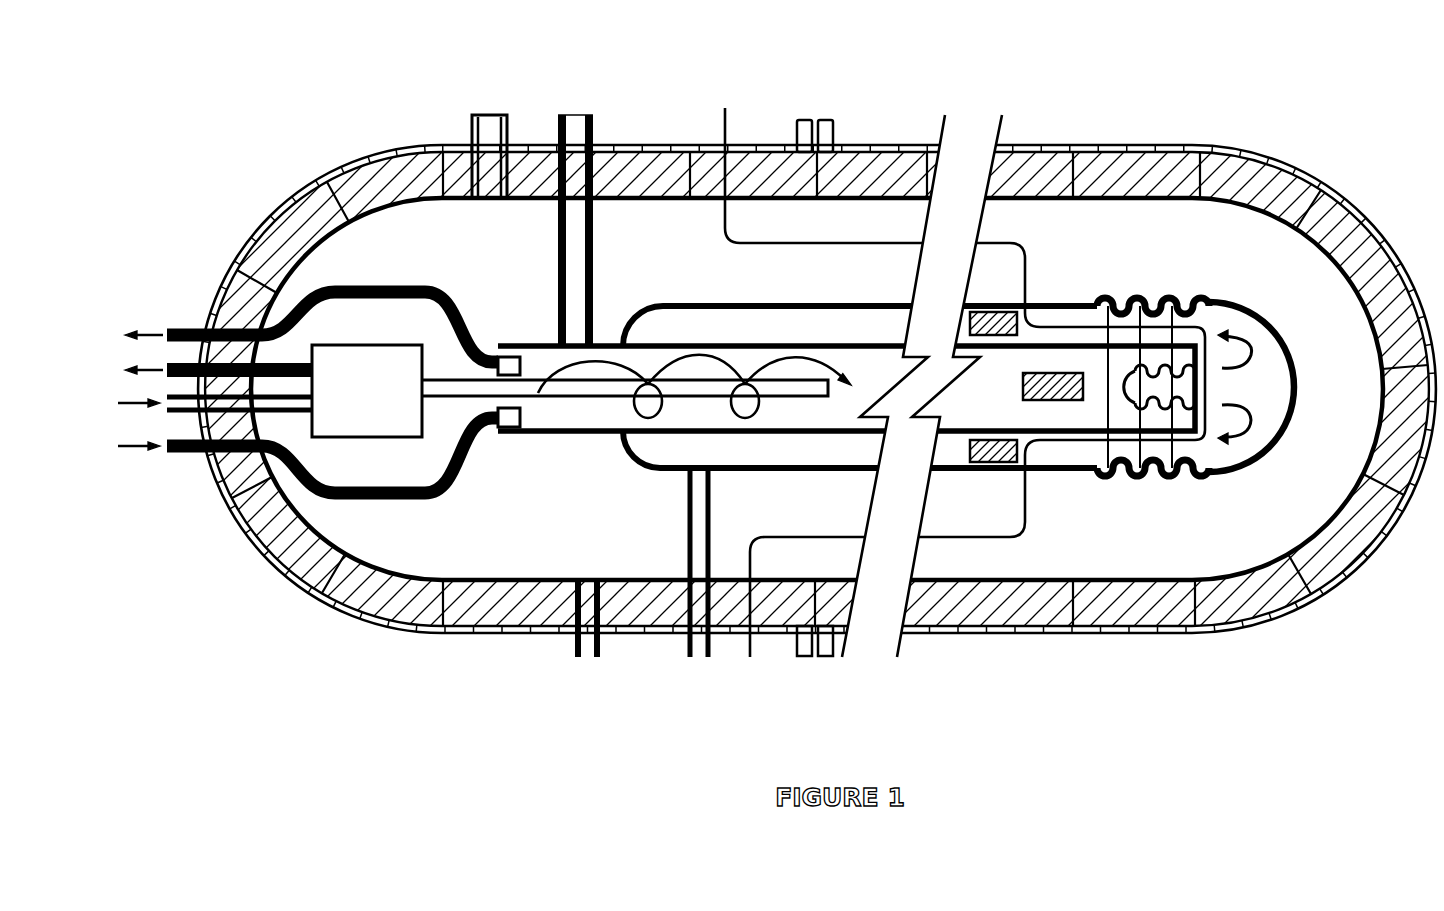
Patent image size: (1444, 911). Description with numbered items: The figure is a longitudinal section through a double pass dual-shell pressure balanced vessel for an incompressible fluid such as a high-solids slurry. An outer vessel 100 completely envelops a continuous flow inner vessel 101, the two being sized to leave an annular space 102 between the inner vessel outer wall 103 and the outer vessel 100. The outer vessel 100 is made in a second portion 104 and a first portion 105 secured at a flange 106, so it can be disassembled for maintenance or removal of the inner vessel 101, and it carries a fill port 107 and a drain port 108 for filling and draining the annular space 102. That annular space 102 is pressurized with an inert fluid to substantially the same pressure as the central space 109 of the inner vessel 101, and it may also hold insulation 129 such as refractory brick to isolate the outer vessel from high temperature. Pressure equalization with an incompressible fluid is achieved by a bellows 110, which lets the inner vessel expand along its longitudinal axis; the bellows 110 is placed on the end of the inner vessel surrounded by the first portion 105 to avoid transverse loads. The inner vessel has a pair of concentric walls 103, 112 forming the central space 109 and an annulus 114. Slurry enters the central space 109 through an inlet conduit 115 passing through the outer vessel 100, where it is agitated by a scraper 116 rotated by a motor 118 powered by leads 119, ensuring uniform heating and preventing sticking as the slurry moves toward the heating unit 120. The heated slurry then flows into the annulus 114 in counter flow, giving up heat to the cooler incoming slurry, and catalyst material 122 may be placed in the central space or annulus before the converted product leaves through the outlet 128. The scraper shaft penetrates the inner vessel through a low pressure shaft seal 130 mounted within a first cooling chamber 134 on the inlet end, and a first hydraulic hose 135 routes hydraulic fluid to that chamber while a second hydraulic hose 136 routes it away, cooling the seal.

The outer vessel 100 is at (254, 141).
The continuous flow inner vessel 101 is at (1293, 175).
The annular space 102 is at (400, 255).
The inner vessel outer wall 103 is at (665, 303).
The second portion of the outer vessel 104 is at (667, 148).
The first portion of the outer vessel 105 is at (890, 140).
The flange 106 is at (820, 122).
The fill port 107 is at (480, 113).
The drain port 108 is at (600, 657).
The central space 109 is at (860, 362).
The bellows 110 is at (1249, 265).
The wall forming the central space 112 is at (1077, 313).
The annulus 114 is at (1127, 307).
The inlet conduit 115 is at (565, 113).
The scraper 116 is at (582, 393).
The motor 118 is at (330, 440).
The leads 119 is at (222, 378).
The heating unit 120 is at (1140, 397).
The catalyst material 122 is at (1000, 462).
The outlet 128 is at (697, 660).
The insulation 129 is at (1280, 615).
The shaft seal 130 is at (492, 425).
The first cooling chamber 134 is at (498, 422).
The first hydraulic hose 135 is at (363, 500).
The second hydraulic hose 136 is at (177, 332).